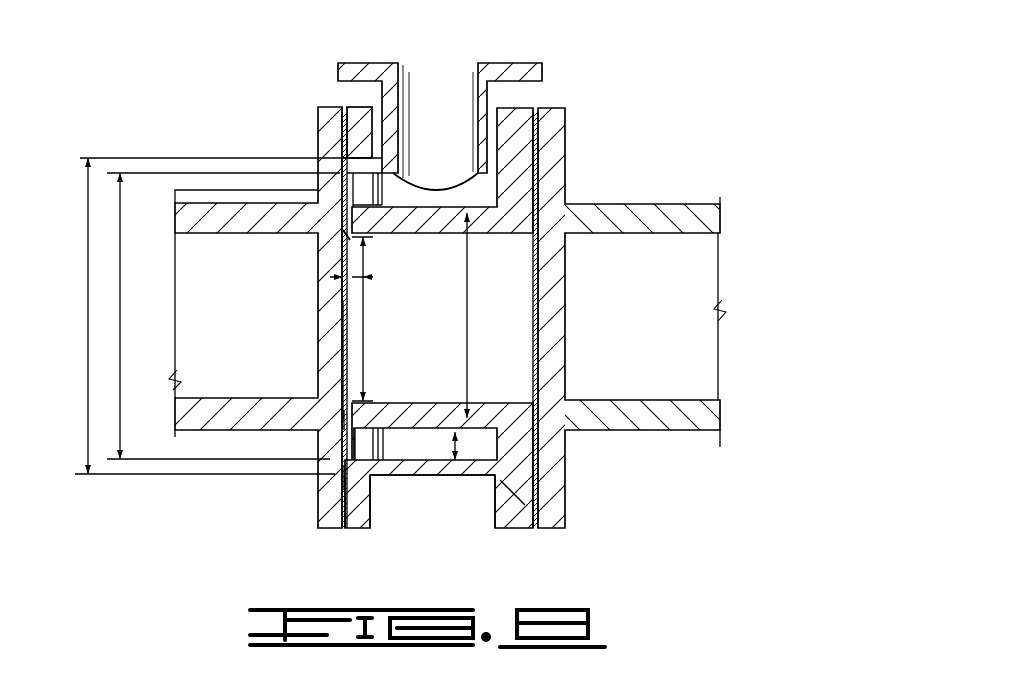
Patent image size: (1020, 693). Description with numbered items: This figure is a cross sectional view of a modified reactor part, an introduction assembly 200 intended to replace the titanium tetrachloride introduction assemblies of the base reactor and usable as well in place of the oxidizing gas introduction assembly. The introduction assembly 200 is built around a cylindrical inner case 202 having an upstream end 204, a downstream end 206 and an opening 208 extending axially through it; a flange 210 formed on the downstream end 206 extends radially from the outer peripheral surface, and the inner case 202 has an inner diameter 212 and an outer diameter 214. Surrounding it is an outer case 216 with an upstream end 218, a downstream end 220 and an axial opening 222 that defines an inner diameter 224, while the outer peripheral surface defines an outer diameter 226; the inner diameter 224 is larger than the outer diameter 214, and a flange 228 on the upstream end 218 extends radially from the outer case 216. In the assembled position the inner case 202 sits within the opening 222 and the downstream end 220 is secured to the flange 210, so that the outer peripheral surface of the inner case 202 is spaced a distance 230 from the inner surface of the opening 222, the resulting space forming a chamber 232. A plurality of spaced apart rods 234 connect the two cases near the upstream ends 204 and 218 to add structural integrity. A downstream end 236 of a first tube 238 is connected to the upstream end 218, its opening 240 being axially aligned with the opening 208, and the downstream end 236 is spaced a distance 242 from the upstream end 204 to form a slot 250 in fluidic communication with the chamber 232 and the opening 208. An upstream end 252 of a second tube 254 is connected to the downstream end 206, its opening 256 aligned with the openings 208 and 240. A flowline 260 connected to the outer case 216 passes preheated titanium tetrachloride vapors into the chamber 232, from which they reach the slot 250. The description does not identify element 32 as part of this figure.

The introduction assembly 200 is at (305, 75).
The inner case 202 is at (446, 336).
The upstream end 204 is at (347, 417).
The downstream end 206 is at (537, 417).
The opening 208 is at (408, 232).
The flange 210 is at (513, 487).
The inner diameter 212 is at (364, 333).
The outer diameter 214 is at (467, 293).
The outer case 216 is at (437, 468).
The upstream end 218 is at (340, 477).
The downstream end 220 is at (487, 465).
The opening 222 is at (428, 468).
The inner diameter 224 is at (120, 296).
The outer diameter 226 is at (88, 253).
The flange 228 is at (355, 500).
The distance 230 is at (462, 445).
The chamber 232 is at (420, 461).
The rods 234 is at (368, 186).
The downstream end 236 is at (332, 320).
The first tube 238 is at (243, 413).
The opening 240 is at (255, 317).
The distance 242 is at (372, 280).
The slot 250 is at (345, 237).
The upstream end 252 is at (625, 318).
The second tube 254 is at (645, 322).
The opening 256 is at (605, 403).
The flowline 260 is at (497, 63).
The orifice plate 32 is at (343, 358).